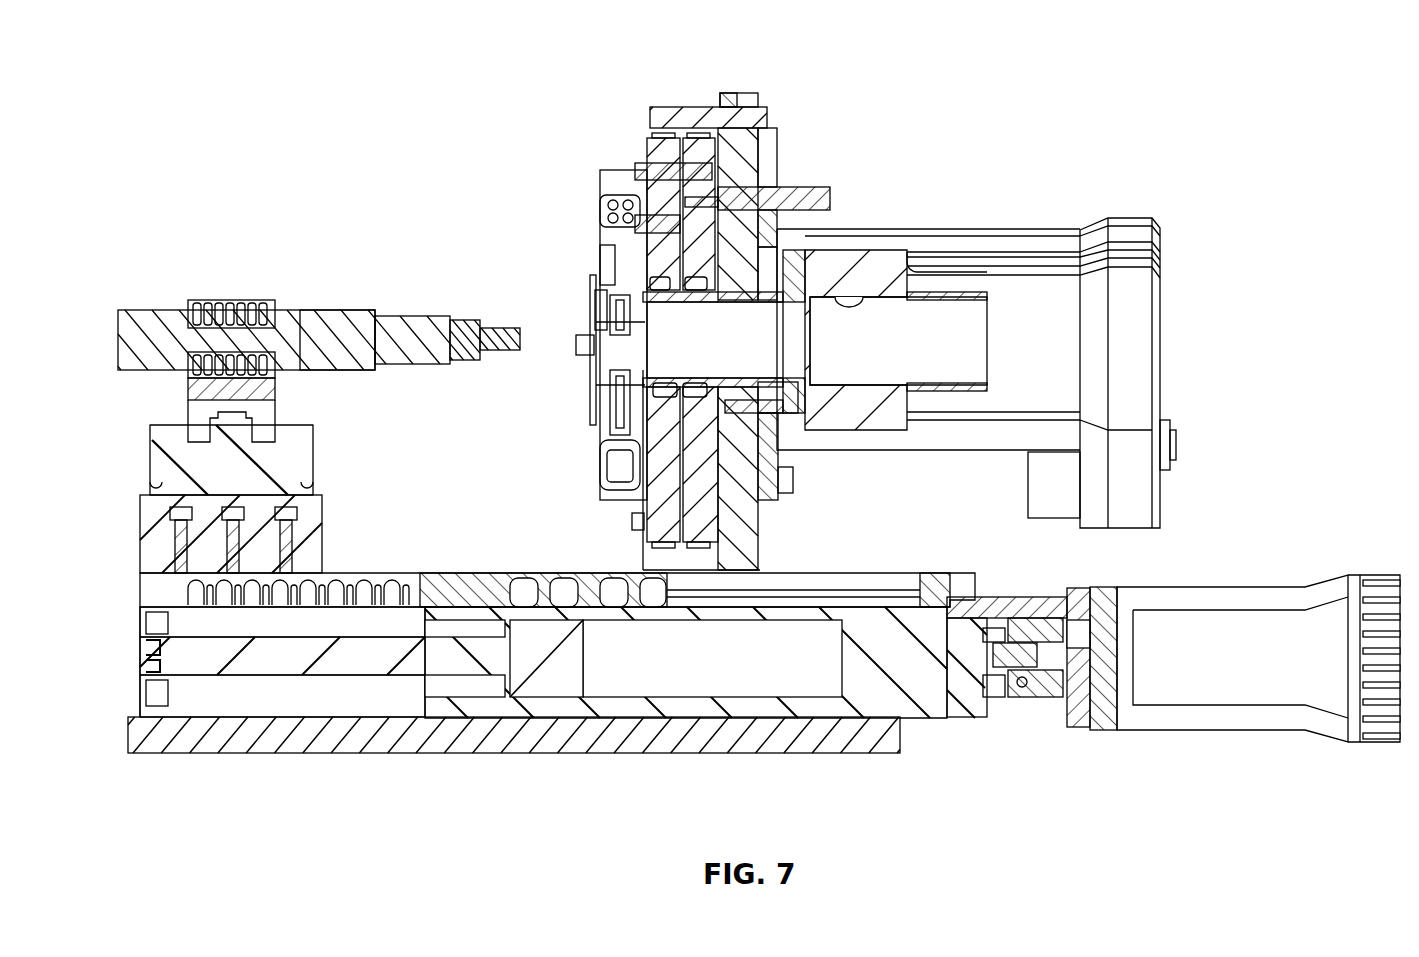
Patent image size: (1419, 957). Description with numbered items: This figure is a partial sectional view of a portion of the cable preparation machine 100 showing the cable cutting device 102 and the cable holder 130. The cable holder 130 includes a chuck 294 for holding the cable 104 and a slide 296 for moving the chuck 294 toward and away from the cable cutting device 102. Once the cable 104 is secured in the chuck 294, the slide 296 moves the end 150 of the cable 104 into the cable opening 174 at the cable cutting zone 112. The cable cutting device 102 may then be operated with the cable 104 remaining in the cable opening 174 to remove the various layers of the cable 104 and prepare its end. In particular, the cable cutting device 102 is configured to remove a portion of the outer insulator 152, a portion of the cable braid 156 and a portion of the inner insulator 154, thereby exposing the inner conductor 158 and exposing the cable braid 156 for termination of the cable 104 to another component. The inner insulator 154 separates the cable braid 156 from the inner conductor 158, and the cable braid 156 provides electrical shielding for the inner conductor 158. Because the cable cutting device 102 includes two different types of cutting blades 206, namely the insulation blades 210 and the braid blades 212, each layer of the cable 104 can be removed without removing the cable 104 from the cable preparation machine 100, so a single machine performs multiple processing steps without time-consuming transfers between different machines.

The cable preparation machine 100 is at (872, 76).
The cable cutting device 102 is at (617, 152).
The cable 104 is at (300, 312).
The cable cutting zone 112 is at (688, 312).
The cable holder 130 is at (136, 630).
The end of the cable 150 is at (426, 300).
The outer insulator 152 is at (344, 312).
The inner insulator 154 is at (464, 320).
The cable braid 156 is at (402, 316).
The inner conductor 158 is at (504, 328).
The cable opening 174 is at (758, 325).
The cutting blades 206 is at (578, 406).
The insulation blades 210 is at (592, 324).
The braid blades 212 is at (590, 388).
The chuck 294 is at (236, 300).
The slide 296 is at (305, 656).